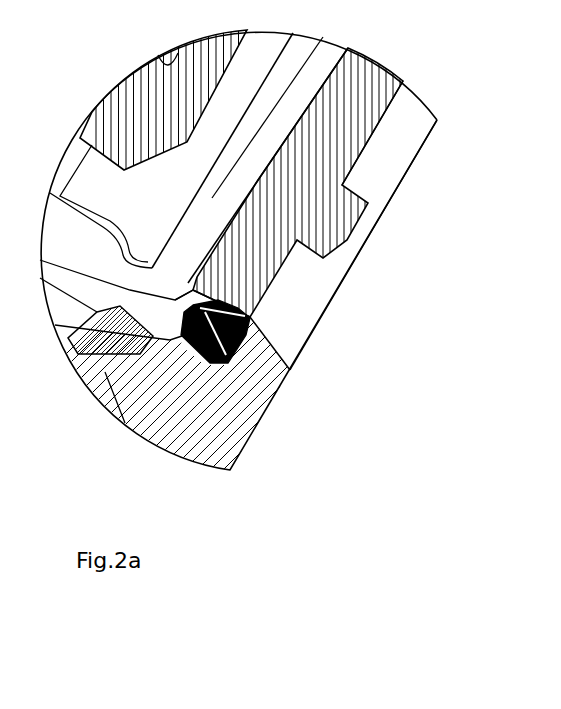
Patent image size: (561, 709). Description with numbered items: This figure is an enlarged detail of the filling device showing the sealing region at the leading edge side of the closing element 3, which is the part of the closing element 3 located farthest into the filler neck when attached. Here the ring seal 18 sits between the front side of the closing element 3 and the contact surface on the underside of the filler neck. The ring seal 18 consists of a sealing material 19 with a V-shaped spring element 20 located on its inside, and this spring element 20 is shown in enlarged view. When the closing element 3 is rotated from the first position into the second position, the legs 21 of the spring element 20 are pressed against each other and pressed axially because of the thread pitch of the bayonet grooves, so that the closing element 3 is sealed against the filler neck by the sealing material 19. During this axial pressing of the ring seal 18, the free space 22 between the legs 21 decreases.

The closing element 3 is at (360, 85).
The ring seal 18 is at (307, 293).
The sealing material 19 is at (193, 352).
The spring element 20 is at (232, 347).
The legs 21 is at (200, 312).
The free space 22 is at (235, 350).